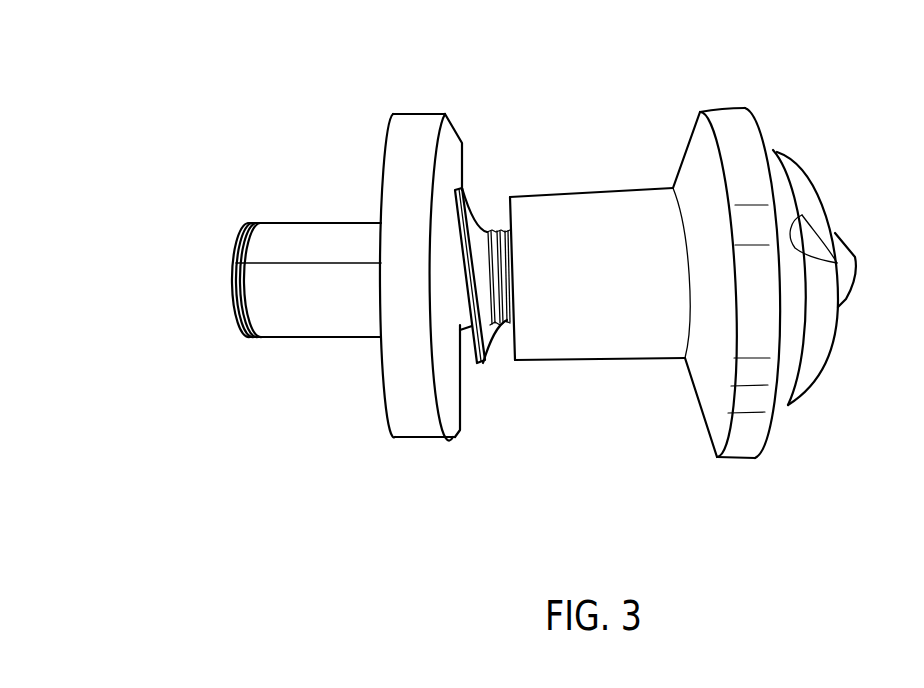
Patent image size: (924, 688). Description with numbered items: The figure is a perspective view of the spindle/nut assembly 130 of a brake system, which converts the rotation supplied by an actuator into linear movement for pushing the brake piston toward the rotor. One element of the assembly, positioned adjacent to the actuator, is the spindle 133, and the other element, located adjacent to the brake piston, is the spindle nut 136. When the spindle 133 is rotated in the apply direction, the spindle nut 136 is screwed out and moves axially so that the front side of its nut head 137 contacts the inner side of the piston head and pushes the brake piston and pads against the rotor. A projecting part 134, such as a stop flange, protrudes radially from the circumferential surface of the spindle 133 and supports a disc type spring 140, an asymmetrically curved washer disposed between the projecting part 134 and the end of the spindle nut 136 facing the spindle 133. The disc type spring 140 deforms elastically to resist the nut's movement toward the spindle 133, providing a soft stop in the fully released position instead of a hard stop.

The spindle/nut assembly 130 is at (207, 32).
The spindle 133 is at (327, 199).
The projecting part 134 is at (417, 440).
The spindle nut 136 is at (833, 181).
The nut head 137 is at (813, 387).
The disc type spring 140 is at (482, 363).